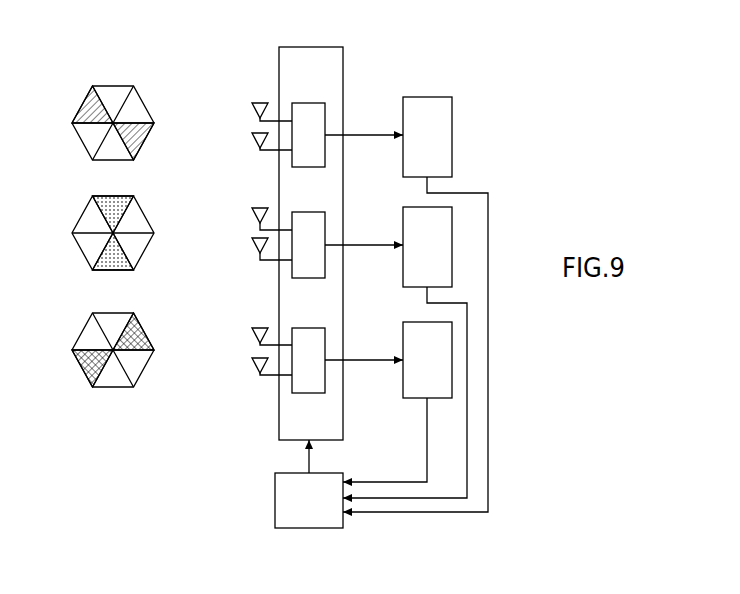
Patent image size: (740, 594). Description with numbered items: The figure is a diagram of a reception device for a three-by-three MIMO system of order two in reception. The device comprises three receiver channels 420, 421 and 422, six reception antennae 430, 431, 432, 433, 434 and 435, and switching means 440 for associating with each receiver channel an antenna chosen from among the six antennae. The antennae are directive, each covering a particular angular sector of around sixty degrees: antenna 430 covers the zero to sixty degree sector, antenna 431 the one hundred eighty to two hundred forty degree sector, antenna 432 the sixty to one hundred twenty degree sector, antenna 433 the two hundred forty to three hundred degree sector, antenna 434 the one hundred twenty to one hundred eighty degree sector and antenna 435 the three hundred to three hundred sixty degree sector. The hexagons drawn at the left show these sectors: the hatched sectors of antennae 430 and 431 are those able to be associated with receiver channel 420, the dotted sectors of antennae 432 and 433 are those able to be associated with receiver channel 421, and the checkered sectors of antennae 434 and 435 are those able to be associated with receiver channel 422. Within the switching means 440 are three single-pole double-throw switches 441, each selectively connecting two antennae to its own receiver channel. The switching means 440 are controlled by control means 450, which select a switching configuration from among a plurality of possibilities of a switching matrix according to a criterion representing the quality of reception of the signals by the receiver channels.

The receiver channel 420 is at (403, 97).
The receiver channel 421 is at (403, 207).
The receiver channel 422 is at (403, 322).
The reception antenna 430 is at (253, 105).
The reception antenna 431 is at (253, 135).
The reception antenna 432 is at (253, 210).
The reception antenna 433 is at (253, 240).
The reception antenna 434 is at (253, 330).
The reception antenna 435 is at (253, 360).
The switching means 440 is at (302, 47).
The single-pole double-throw switch 441 is at (313, 103).
The control means 450 is at (310, 528).